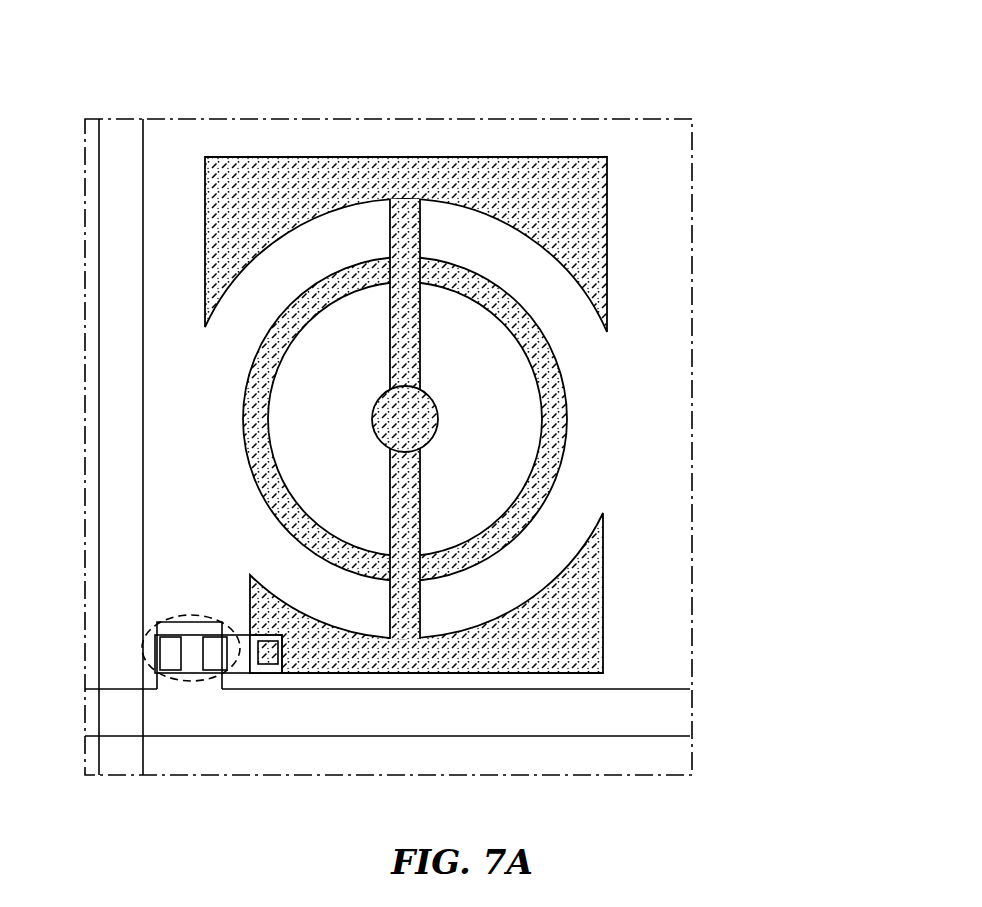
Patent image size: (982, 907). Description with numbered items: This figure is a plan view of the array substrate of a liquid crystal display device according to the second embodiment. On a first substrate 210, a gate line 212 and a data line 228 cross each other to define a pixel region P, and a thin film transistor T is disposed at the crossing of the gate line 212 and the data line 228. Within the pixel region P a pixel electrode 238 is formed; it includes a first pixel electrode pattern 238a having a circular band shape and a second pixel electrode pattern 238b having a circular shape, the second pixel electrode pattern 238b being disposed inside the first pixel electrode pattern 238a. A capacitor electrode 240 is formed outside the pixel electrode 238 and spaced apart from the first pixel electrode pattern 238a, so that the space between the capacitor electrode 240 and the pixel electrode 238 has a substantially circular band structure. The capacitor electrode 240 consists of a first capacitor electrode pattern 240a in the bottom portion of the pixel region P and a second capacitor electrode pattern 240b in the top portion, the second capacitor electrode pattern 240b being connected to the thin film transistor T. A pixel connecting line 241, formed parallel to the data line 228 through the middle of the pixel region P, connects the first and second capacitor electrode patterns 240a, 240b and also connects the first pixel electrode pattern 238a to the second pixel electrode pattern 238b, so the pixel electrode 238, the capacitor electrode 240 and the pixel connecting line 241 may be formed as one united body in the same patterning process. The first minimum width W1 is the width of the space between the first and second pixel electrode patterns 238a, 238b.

The first substrate 210 is at (694, 143).
The gate line 212 is at (690, 689).
The data line 228 is at (143, 779).
The pixel electrode 238 is at (465, 326).
The first pixel electrode pattern 238a is at (480, 275).
The second pixel electrode pattern 238b is at (413, 420).
The capacitor electrode 240 is at (553, 415).
The first capacitor electrode pattern 240a is at (532, 593).
The second capacitor electrode pattern 240b is at (603, 233).
The pixel connecting line 241 is at (421, 482).
The pixel region P is at (174, 358).
The thin film transistor T is at (188, 683).
The first minimum width W1 is at (371, 418).